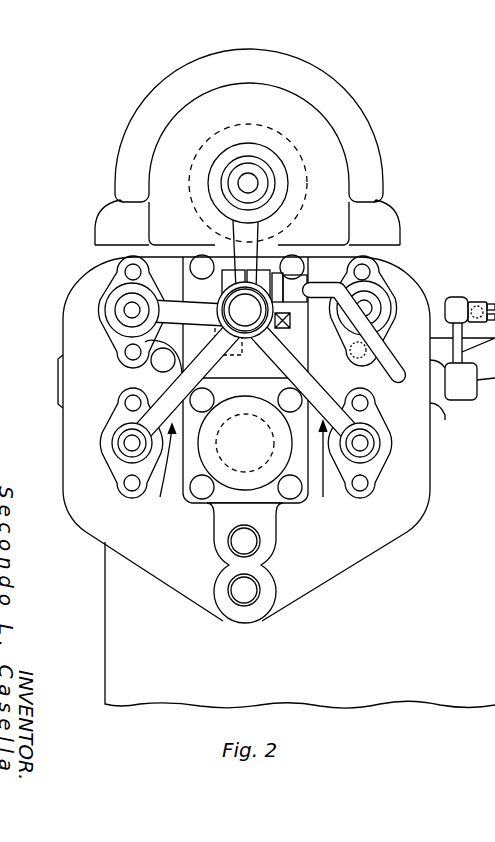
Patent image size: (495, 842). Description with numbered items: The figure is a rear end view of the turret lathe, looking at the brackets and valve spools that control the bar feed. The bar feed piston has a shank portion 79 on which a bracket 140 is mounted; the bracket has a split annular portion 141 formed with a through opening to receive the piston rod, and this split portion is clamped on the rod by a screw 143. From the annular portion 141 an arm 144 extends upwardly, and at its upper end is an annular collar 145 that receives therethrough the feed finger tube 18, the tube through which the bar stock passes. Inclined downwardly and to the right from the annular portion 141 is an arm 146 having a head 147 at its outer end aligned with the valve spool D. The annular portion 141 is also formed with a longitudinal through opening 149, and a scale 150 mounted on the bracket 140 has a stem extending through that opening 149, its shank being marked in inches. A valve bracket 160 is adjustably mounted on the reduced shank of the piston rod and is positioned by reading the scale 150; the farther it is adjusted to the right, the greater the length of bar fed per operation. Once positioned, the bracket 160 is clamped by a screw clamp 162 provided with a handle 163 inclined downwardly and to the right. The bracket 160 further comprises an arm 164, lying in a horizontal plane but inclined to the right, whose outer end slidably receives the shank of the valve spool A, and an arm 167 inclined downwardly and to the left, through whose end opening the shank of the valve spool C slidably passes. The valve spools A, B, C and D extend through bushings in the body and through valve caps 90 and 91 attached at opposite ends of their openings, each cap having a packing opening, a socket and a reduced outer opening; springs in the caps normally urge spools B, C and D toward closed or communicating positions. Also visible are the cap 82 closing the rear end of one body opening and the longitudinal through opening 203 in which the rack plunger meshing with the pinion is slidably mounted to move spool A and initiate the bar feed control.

The feed finger tube 18 is at (235, 177).
The annular collar 145 is at (273, 175).
The split annular portion 141 is at (180, 275).
The piston rod shank portion 79 is at (246, 255).
The arm 144 is at (255, 248).
The screw clamp 162 is at (313, 280).
The longitudinal through opening 149 is at (310, 290).
The valve spool B is at (366, 306).
The valve cap 90 is at (382, 298).
The valve spool A is at (128, 309).
The arm 164 is at (160, 319).
The longitudinal through opening 203 is at (158, 360).
The arm 167 is at (157, 377).
The scale 150 is at (290, 318).
The screw 143 is at (245, 329).
The handle 163 is at (385, 367).
The arm 146 is at (322, 398).
The head 147 is at (368, 440).
The cap 82 is at (203, 456).
The valve spool C is at (128, 447).
The valve bracket 160 is at (162, 475).
The bracket 140 is at (337, 474).
The valve spool D is at (365, 445).
The valve cap 91 is at (381, 461).